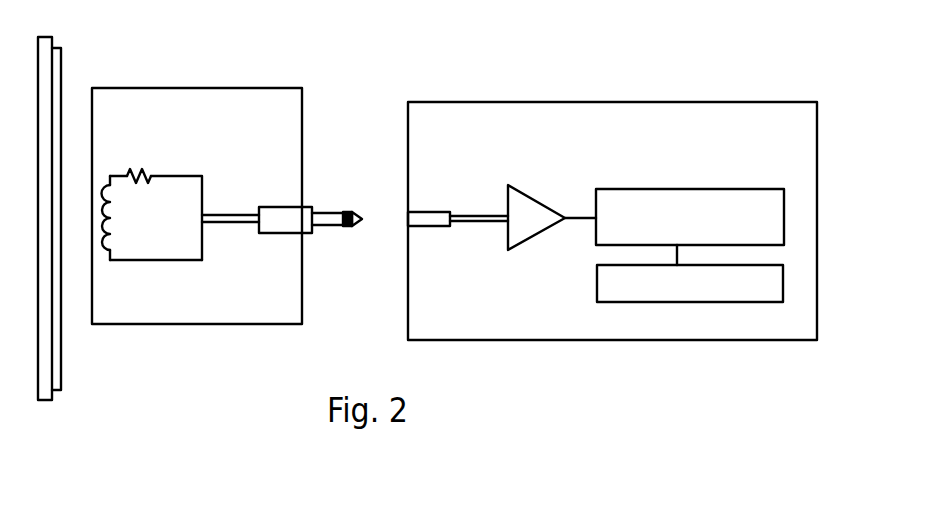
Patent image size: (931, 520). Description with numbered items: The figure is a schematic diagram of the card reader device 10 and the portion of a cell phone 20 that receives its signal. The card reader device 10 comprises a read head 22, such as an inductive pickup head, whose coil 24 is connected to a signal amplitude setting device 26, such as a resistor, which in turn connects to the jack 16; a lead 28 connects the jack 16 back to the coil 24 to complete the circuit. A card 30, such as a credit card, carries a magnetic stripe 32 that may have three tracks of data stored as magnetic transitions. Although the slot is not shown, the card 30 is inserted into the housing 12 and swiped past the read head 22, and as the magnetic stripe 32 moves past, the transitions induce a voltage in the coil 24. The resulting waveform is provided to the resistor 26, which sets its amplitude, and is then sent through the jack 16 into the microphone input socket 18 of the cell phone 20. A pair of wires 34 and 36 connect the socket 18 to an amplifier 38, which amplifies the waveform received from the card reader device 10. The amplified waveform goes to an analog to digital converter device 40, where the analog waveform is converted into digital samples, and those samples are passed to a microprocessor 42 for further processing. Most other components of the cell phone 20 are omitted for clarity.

The card reader device 10 is at (174, 82).
The housing 12 is at (267, 100).
The jack 16 is at (276, 216).
The microphone input socket 18 is at (418, 213).
The cell phone 20 is at (617, 101).
The read head 22 is at (152, 213).
The coil 24 is at (112, 222).
The signal amplitude setting device 26 is at (143, 172).
The lead 28 is at (152, 262).
The card 30 is at (47, 393).
The magnetic stripe 32 is at (61, 77).
The wire 34 is at (466, 215).
The wire 36 is at (468, 223).
The amplifier 38 is at (530, 194).
The analog to digital converter device 40 is at (647, 188).
The microprocessor 42 is at (597, 285).